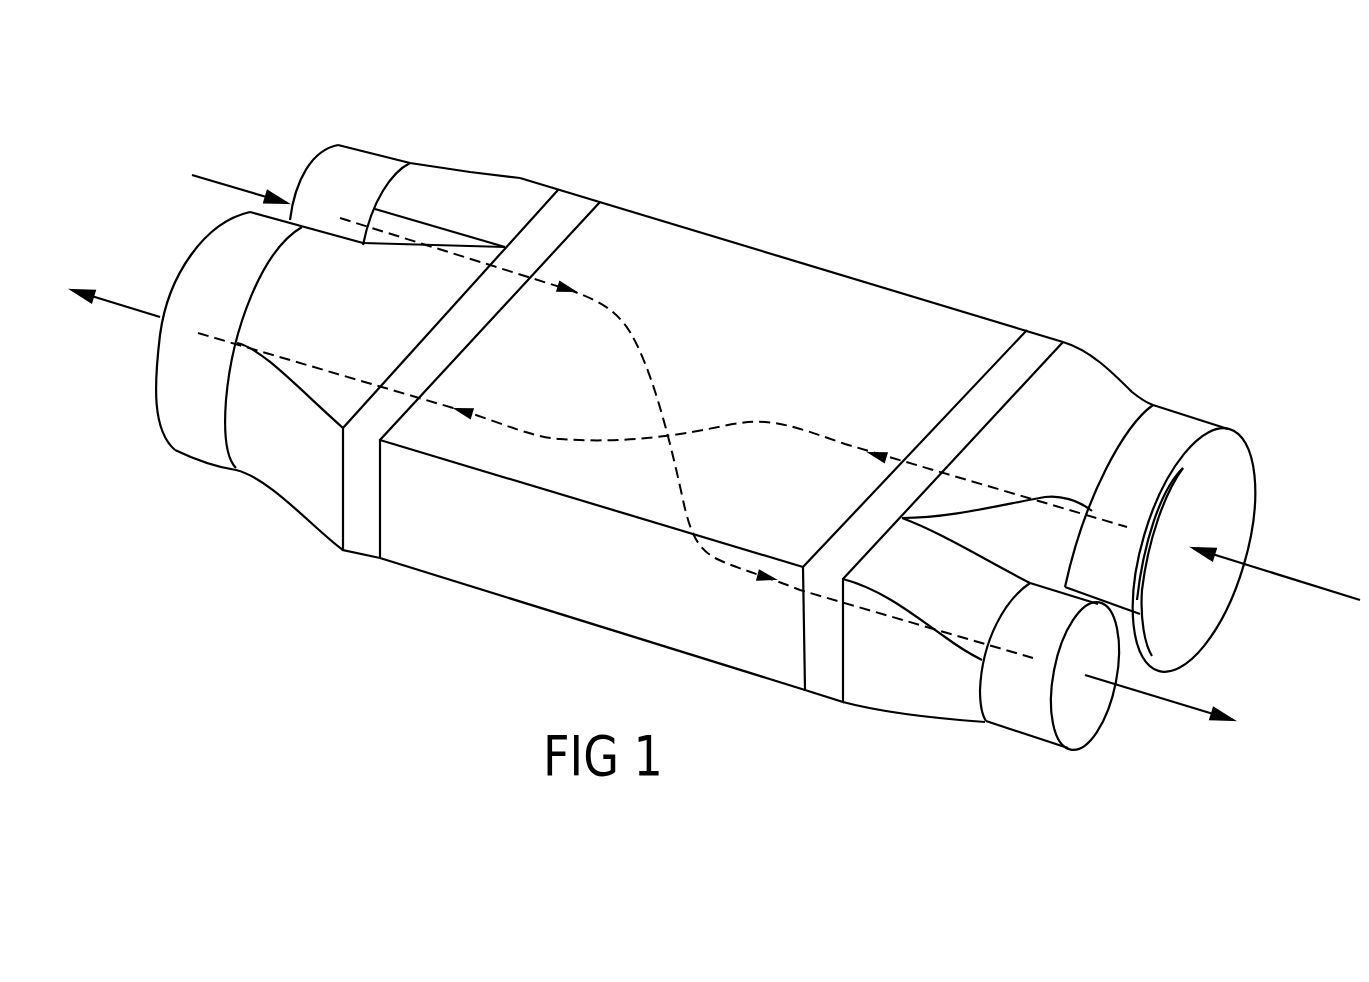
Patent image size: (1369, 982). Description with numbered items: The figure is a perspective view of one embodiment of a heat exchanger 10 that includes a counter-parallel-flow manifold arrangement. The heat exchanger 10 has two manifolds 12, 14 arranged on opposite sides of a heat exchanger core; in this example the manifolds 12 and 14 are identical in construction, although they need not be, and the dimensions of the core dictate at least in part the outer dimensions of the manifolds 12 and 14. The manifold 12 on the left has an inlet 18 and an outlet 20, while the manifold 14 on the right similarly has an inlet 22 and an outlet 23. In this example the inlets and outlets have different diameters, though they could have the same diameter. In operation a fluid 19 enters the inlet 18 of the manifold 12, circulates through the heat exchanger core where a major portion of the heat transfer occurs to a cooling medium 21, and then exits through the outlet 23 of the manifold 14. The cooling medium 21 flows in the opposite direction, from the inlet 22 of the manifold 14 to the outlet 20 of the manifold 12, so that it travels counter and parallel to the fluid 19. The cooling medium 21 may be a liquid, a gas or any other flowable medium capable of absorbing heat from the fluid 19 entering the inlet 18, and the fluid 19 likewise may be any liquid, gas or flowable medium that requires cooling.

The heat exchanger 10 is at (878, 213).
The manifold 12 is at (531, 164).
The manifold 14 is at (1111, 347).
The inlet 18 is at (343, 153).
The fluid 19 is at (227, 185).
The outlet 20 is at (168, 438).
The cooling medium 21 is at (133, 309).
The inlet 22 is at (1170, 630).
The outlet 23 is at (1067, 717).